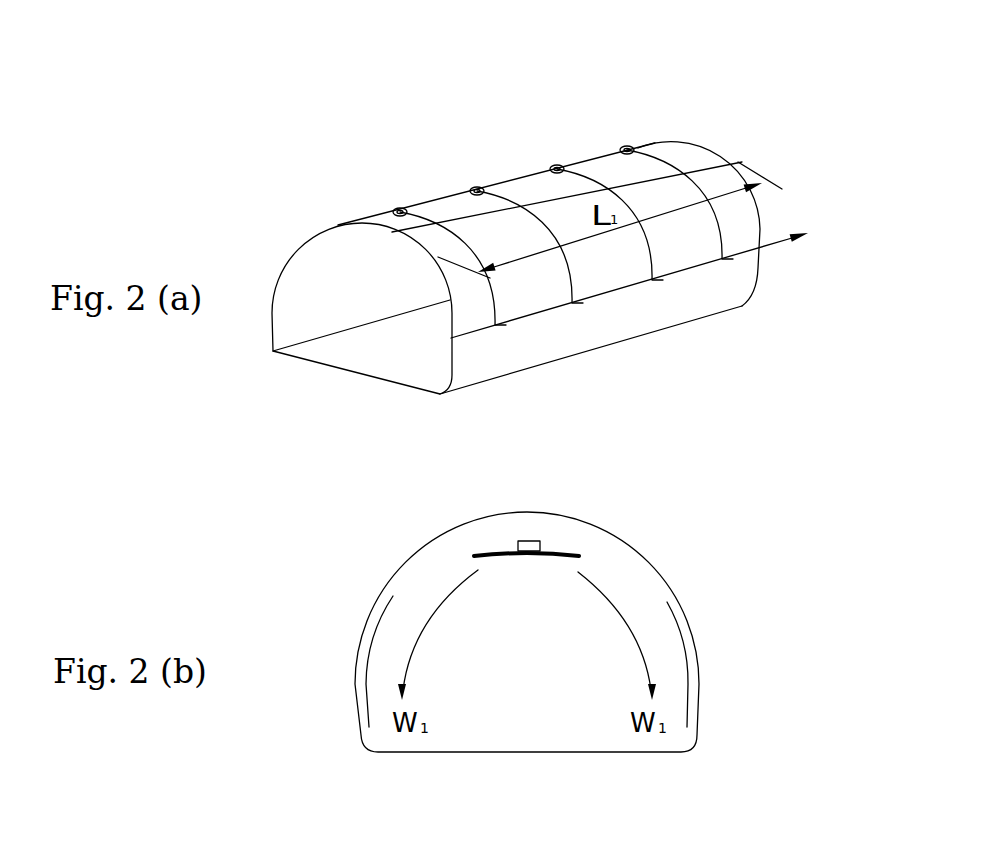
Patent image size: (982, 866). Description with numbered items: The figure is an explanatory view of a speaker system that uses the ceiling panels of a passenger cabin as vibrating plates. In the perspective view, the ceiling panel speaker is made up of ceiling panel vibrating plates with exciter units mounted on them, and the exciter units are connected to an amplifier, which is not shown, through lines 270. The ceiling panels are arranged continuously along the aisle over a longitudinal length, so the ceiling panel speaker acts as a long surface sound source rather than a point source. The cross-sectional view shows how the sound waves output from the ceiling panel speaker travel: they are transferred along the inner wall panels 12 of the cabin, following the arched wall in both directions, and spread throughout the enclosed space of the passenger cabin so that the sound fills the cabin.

The lines 270 is at (745, 300).
The inner wall panels 12 is at (694, 695).